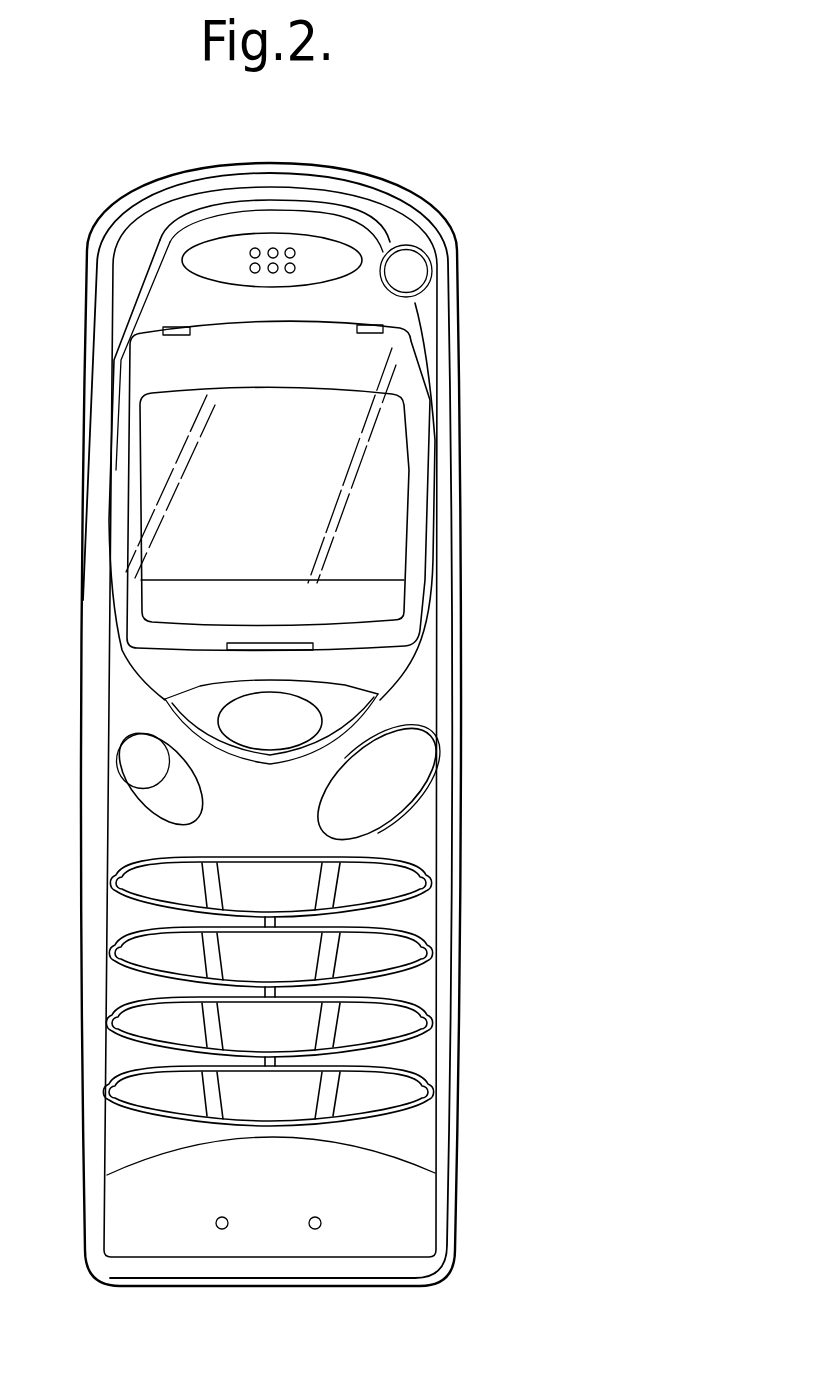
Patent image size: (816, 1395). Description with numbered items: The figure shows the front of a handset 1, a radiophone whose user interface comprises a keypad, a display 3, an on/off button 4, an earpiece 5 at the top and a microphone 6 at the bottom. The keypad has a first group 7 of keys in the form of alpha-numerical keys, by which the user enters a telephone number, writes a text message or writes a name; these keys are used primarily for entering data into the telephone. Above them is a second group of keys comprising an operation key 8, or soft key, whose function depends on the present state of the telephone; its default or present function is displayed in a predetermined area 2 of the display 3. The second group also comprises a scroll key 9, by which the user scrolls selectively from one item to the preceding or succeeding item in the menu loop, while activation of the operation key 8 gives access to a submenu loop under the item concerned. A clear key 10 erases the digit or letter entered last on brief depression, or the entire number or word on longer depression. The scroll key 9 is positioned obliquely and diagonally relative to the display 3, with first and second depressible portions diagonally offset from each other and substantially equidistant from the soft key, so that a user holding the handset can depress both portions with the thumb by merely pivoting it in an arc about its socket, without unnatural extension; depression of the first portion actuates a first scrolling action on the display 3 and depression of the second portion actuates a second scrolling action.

The mobile telephone 1 is at (474, 401).
The predetermined area 2 is at (158, 600).
The display 3 is at (377, 548).
The on/off button 4 is at (406, 277).
The earpiece 5 is at (274, 248).
The microphone 6 is at (276, 1228).
The first group of keys 7 is at (417, 988).
The operation key 8 is at (297, 715).
The scroll key 9 is at (392, 785).
The clear key 10 is at (135, 758).